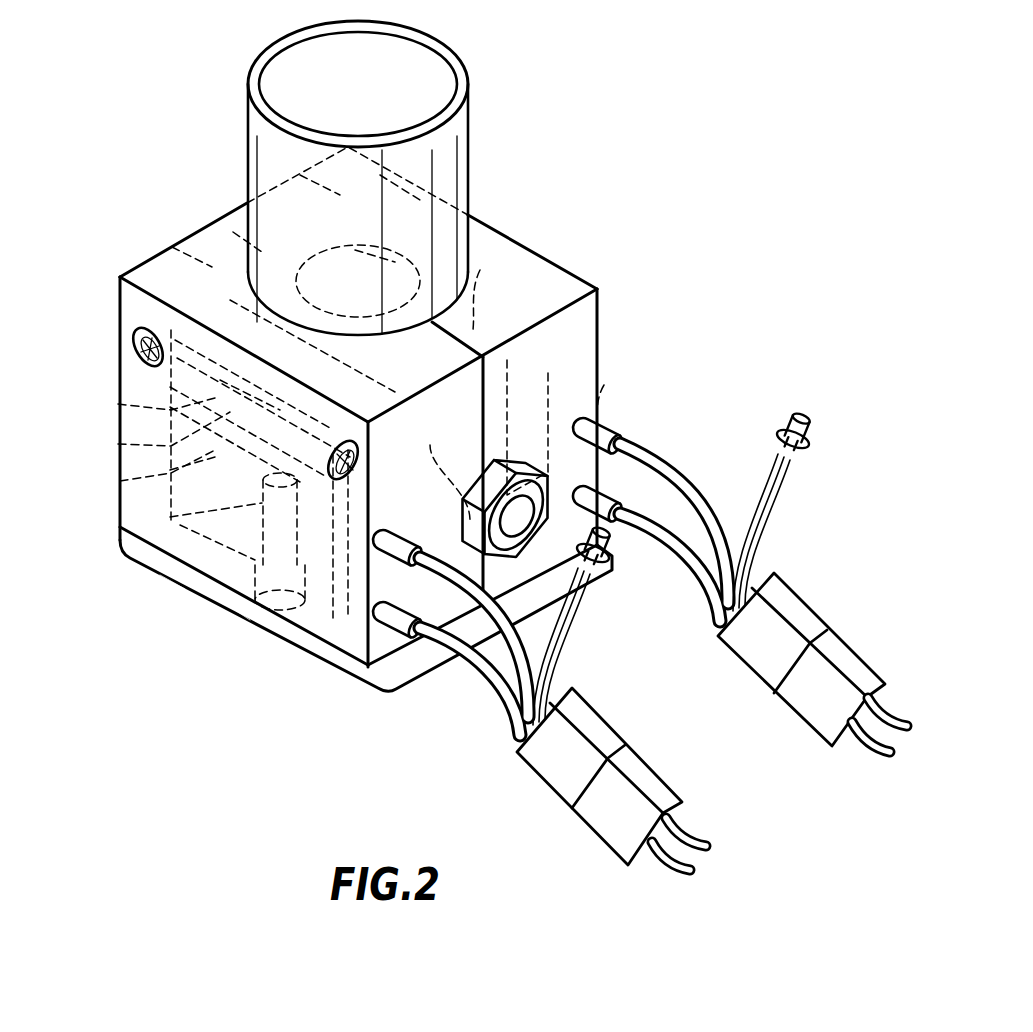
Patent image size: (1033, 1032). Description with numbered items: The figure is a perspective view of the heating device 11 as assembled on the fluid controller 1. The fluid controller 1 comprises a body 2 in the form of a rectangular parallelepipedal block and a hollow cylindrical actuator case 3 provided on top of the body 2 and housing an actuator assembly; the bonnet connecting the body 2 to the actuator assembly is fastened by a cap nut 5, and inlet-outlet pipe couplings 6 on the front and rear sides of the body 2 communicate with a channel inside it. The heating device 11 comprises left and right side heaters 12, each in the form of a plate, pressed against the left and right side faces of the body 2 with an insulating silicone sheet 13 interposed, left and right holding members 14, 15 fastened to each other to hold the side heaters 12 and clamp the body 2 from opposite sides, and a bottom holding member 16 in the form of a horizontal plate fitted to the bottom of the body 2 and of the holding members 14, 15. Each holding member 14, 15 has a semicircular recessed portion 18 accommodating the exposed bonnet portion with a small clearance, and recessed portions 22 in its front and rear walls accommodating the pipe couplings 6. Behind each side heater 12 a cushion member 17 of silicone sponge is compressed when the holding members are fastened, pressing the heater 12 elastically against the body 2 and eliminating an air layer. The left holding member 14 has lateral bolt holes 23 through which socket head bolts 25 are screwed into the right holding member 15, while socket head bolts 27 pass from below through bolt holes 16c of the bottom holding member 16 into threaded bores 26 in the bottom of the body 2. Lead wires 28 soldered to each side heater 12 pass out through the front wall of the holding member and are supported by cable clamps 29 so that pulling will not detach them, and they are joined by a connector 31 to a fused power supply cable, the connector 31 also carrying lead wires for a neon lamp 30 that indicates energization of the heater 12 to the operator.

The fluid controller 1 is at (447, 62).
The body 2 is at (604, 385).
The actuator case 3 is at (263, 140).
The cap nut 5 is at (480, 270).
The inlet-outlet pipe coupling 6 is at (172, 247).
The heating device 11 is at (640, 265).
The side heater 12 is at (120, 446).
The insulating silicone sheet 13 is at (118, 406).
The left holding member 14 is at (137, 268).
The right holding member 15 is at (598, 352).
The bottom holding member 16 is at (312, 657).
The bolt hole 16c is at (190, 580).
The cushion member 17 is at (120, 480).
The recessed portion 18 is at (233, 232).
The recessed portion 22 is at (458, 474).
The bolt hole 23 is at (135, 334).
The socket head bolt 25 is at (140, 356).
The threaded bore 26 is at (138, 555).
The socket head bolt 27 is at (240, 617).
The lead wire 28 is at (500, 603).
The cable clamp 29 is at (404, 565).
The neon lamp 30 is at (611, 548).
The connector 31 is at (552, 770).